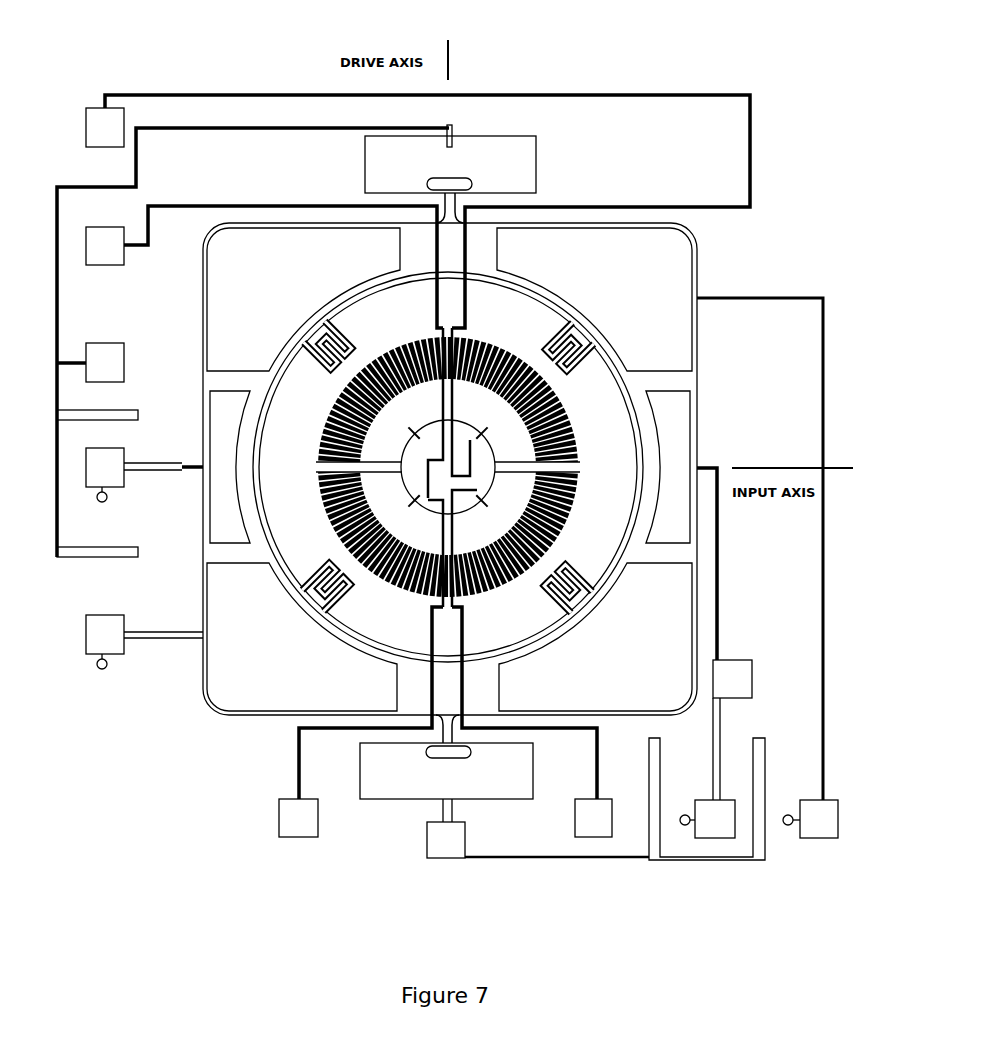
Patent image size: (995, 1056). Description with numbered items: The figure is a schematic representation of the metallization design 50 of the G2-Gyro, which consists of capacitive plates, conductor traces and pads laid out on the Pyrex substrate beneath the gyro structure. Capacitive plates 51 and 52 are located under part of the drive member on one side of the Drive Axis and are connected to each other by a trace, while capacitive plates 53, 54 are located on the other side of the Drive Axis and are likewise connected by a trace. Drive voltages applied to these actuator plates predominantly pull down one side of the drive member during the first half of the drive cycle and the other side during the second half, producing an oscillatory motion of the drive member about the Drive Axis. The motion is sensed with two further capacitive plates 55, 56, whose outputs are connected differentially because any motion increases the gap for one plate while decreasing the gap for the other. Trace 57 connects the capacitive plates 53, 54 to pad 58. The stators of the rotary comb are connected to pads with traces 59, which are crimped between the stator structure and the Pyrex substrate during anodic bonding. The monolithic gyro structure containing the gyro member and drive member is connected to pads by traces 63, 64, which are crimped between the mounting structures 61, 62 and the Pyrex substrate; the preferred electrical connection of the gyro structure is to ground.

The metallization design 50 is at (767, 240).
The capacitive plate 51 is at (303, 299).
The capacitive plate 52 is at (302, 637).
The capacitive plate 53 is at (594, 299).
The capacitive plate 54 is at (595, 637).
The capacitive plate 55 is at (220, 406).
The capacitive plate 56 is at (673, 400).
The trace 57 is at (815, 363).
The pad 58 is at (820, 840).
The trace 59 is at (487, 507).
The mounting structure 61 is at (450, 164).
The mounting structure 62 is at (446, 771).
The trace 63 is at (440, 808).
The trace 64 is at (458, 126).